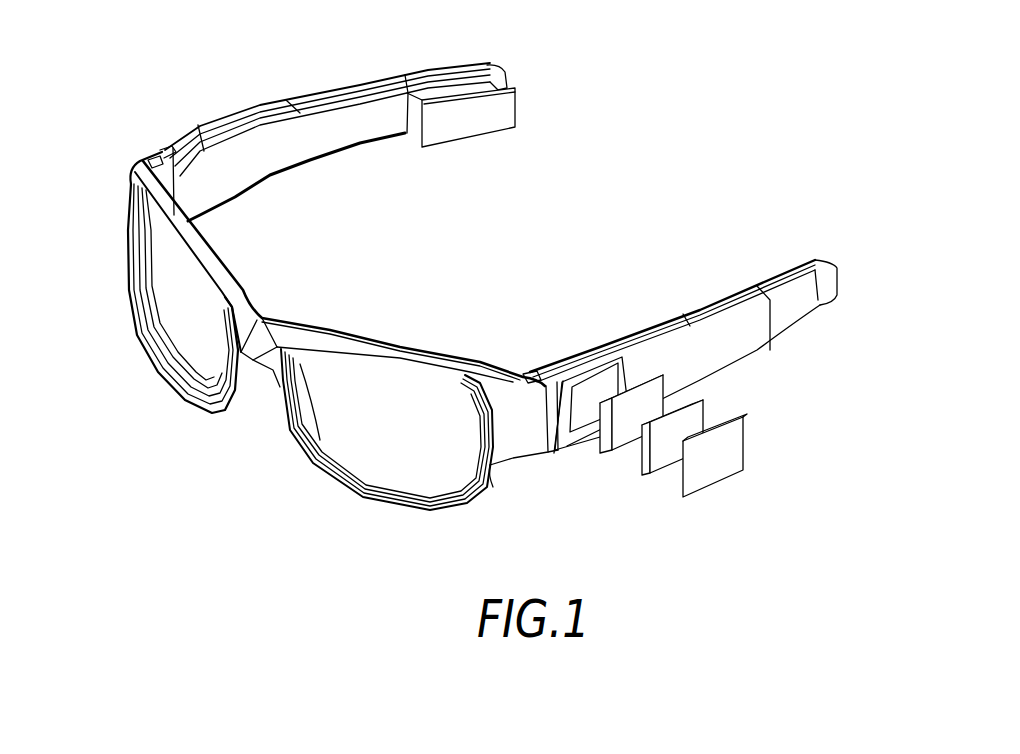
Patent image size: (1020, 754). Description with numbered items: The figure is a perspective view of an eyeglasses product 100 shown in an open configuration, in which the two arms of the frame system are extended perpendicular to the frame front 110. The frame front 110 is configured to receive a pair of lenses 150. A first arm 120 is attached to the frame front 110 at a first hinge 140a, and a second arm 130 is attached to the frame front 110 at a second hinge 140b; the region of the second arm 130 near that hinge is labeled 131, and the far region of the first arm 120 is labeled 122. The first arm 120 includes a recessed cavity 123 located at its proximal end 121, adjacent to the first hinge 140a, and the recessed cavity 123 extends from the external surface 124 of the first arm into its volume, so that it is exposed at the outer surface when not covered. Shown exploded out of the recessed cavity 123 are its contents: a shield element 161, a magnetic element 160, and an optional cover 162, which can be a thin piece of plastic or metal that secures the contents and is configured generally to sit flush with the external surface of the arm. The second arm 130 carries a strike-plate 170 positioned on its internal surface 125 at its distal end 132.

The eyeglasses product 100 is at (153, 460).
The frame front 110 is at (267, 313).
The first arm 120 is at (728, 300).
The proximal end 121 is at (558, 457).
The temple end portion 122 is at (832, 290).
The recessed cavity 123 is at (613, 388).
The external surface 124 is at (663, 347).
The internal surface 125 is at (318, 132).
The second arm 130 is at (253, 110).
The hinge portion 131 is at (173, 143).
The distal end 132 is at (500, 72).
The first hinge 140a is at (533, 378).
The second hinge 140b is at (152, 163).
The lenses 150 is at (202, 355).
The magnetic element 160 is at (700, 419).
The shield element 161 is at (637, 403).
The cover 162 is at (725, 465).
The strike-plate 170 is at (495, 117).